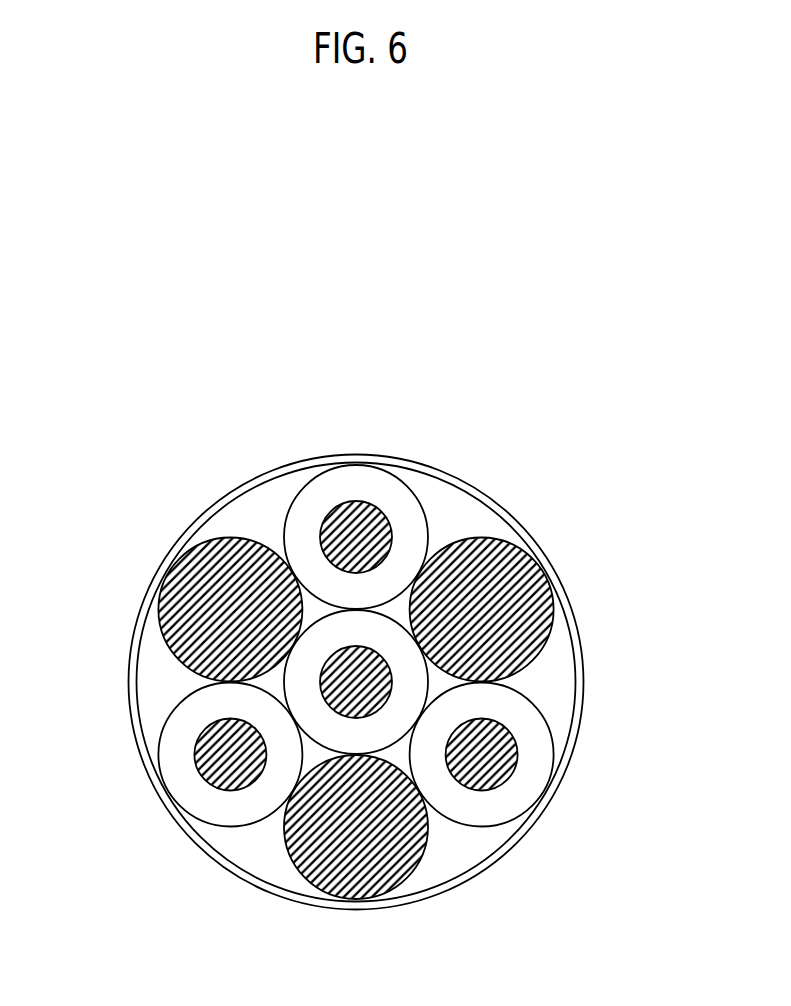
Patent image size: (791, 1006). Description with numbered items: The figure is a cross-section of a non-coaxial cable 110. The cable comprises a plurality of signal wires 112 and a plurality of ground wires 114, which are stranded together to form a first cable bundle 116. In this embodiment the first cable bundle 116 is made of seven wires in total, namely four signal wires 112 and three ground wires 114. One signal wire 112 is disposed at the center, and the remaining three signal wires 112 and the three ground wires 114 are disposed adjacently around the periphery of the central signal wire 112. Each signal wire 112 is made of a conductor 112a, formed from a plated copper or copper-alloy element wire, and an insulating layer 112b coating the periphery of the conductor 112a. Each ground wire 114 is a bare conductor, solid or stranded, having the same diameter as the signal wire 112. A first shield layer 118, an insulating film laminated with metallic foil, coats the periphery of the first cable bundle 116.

The non-coaxial cable 110 is at (482, 298).
The signal wire 112 is at (394, 610).
The conductor 112a is at (438, 410).
The insulating layer 112b is at (377, 482).
The ground wire 114 is at (528, 577).
The first cable bundle 116 is at (451, 522).
The first shield layer 118 is at (133, 682).